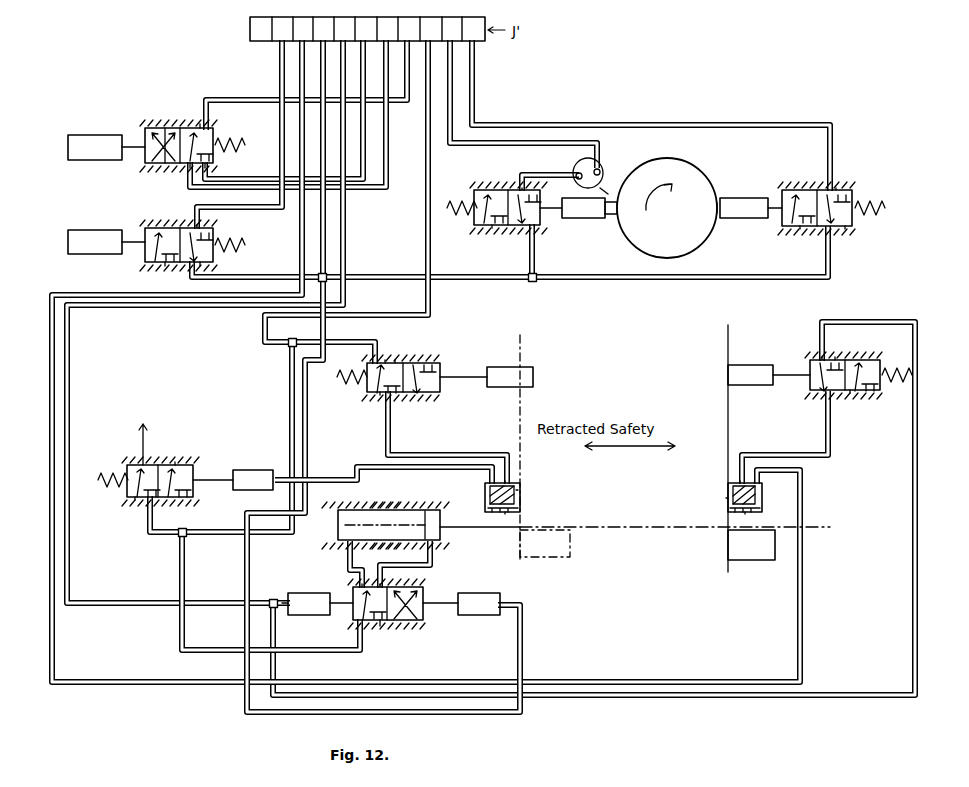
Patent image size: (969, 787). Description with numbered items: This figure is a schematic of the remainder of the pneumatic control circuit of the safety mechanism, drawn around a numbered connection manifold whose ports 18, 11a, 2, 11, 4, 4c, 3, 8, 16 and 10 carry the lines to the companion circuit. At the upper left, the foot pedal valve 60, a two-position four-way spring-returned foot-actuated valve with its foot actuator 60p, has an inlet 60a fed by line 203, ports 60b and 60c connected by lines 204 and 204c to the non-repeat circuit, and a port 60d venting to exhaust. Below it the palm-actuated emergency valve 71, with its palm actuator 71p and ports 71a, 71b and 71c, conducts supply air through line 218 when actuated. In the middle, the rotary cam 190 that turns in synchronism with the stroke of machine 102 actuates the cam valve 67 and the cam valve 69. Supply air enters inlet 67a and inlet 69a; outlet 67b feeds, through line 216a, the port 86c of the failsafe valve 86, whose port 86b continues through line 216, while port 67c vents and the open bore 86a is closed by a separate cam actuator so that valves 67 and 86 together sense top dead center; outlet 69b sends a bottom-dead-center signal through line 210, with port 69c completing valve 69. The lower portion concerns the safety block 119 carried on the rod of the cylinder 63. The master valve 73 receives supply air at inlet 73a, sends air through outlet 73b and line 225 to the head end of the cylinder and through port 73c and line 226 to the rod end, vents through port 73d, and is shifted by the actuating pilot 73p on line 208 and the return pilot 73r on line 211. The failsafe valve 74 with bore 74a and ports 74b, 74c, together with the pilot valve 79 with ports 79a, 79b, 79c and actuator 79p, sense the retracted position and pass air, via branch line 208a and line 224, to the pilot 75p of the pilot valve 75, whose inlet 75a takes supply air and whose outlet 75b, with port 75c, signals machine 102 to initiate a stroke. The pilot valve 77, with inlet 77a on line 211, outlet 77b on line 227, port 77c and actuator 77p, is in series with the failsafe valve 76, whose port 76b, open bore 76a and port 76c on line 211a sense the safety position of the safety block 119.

The foot pedal valve 60 is at (146, 128).
The inlet of valve 60 60a is at (204, 124).
The port of valve 60 60b is at (210, 175).
The port of valve 60 60c is at (185, 168).
The port of valve 60 60d is at (183, 126).
The foot pedal actuator 60p is at (80, 135).
The emergency valve 71 is at (213, 230).
The valve port 71a is at (180, 268).
The valve port 71b is at (192, 226).
The valve port 71c is at (205, 266).
The palm button actuator 71p is at (80, 230).
The line 203 is at (255, 100).
The line 204 is at (366, 165).
The line 204c is at (400, 195).
The line 208 is at (427, 192).
The conduit branch 208a is at (357, 470).
The line 218 is at (283, 212).
The line 210 is at (800, 122).
The line 211 is at (70, 333).
The line 211a is at (805, 512).
The line 216 is at (585, 140).
The line 216a is at (522, 172).
The failsafe valve 86 is at (611, 129).
The open bore of valve 86 86a is at (612, 190).
The port of valve 86 86b is at (607, 156).
The port of valve 86 86c is at (578, 160).
The rotary cam 190 is at (708, 175).
The cam valve 67 is at (540, 222).
The inlet of valve 67 67a is at (540, 232).
The outlet of valve 67 67b is at (520, 188).
The port of valve 67 67c is at (494, 235).
The cam valve 69 is at (850, 186).
The inlet of valve 69 69a is at (812, 232).
The outlet of valve 69 69b is at (836, 188).
The valve port 69c is at (850, 236).
The air supply line 2 is at (380, 680).
The pilot valve 77 is at (885, 360).
The inlet of valve 77 77a is at (818, 358).
The outlet of valve 77 77b is at (838, 400).
The valve port 77c is at (842, 358).
The actuator of valve 77 77p is at (750, 362).
The line 227 is at (832, 445).
The pilot valve 79 is at (448, 366).
The valve port 79a is at (380, 360).
The valve port 79b is at (376, 396).
The valve port 79c is at (398, 360).
The actuator of valve 79 79p is at (530, 362).
The conduit 224 is at (458, 448).
The pilot valve 75 is at (132, 462).
The inlet of valve 75 75a is at (150, 512).
The outlet of valve 75 75b is at (160, 462).
The valve port 75c is at (132, 506).
The pilot of valve 75 75p is at (257, 470).
The machine 102 is at (139, 435).
The cylinder 63 is at (370, 508).
The failsafe valve 74 is at (528, 515).
The bore of valve 74 74a is at (522, 500).
The block port 74b is at (520, 488).
The block port 74c is at (505, 516).
The failsafe valve 76 is at (716, 493).
The open bore of valve 76 76a is at (727, 500).
The port of valve 76 76b is at (735, 484).
The port of valve 76 76c is at (735, 520).
The master valve 73 is at (425, 628).
The inlet of valve 73 73a is at (360, 622).
The outlet of valve 73 73b is at (362, 582).
The port of valve 73 73c is at (388, 583).
The port of valve 73 73d is at (382, 626).
The actuating pilot of valve 73 73p is at (510, 594).
The return pilot of valve 73 73r is at (285, 616).
The line 225 is at (345, 558).
The line 226 is at (435, 565).
The safety block 119 is at (730, 560).
The manifold port 18 is at (282, 29).
The manifold port 11a is at (305, 29).
The manifold port 11 is at (344, 29).
The manifold port 4 is at (366, 29).
The manifold port 4c is at (387, 29).
The manifold port 3 is at (409, 29).
The manifold port 8 is at (431, 29).
The manifold port 16 is at (452, 29).
The manifold port 10 is at (473, 29).